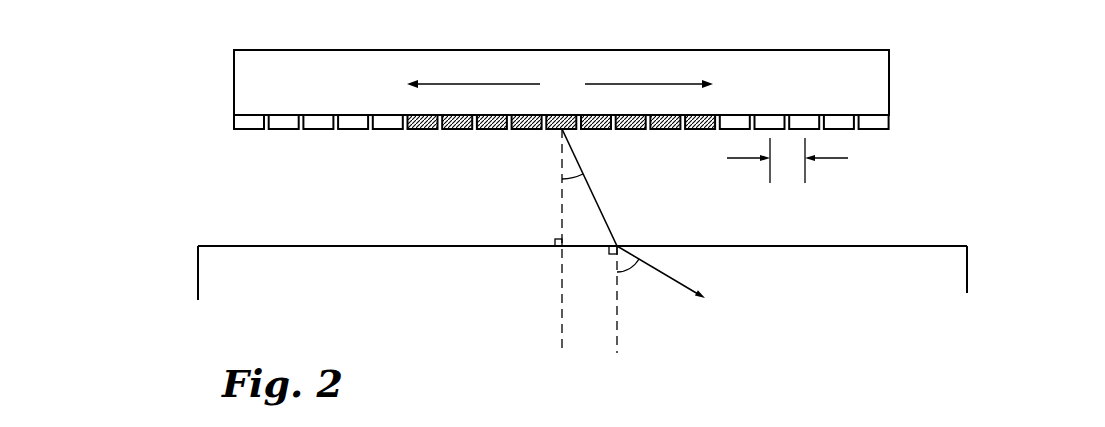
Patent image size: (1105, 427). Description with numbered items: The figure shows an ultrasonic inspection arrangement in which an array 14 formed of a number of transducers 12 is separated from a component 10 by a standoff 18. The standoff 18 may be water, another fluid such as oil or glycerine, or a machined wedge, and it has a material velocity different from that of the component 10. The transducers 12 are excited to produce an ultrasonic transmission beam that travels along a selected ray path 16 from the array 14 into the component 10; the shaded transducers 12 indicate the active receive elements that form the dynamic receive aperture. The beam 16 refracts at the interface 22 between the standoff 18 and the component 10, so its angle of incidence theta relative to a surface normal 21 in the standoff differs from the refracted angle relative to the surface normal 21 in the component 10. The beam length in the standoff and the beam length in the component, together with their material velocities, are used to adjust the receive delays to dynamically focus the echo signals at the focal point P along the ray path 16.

The component 10 is at (596, 233).
The transducers 12 is at (383, 129).
The array 14 is at (509, 123).
The ray path 16 is at (636, 224).
The standoff 18 is at (397, 222).
The surface normal 21 is at (558, 229).
The interface 22 is at (900, 246).